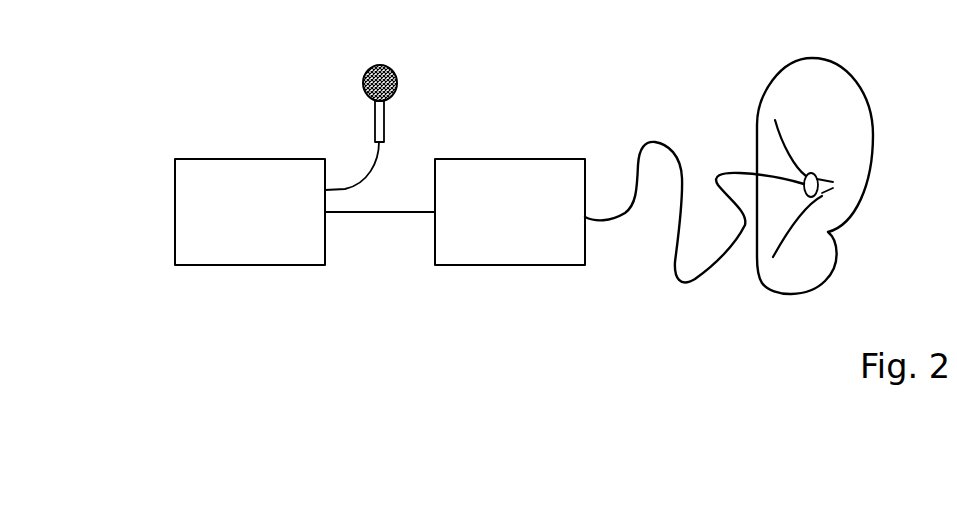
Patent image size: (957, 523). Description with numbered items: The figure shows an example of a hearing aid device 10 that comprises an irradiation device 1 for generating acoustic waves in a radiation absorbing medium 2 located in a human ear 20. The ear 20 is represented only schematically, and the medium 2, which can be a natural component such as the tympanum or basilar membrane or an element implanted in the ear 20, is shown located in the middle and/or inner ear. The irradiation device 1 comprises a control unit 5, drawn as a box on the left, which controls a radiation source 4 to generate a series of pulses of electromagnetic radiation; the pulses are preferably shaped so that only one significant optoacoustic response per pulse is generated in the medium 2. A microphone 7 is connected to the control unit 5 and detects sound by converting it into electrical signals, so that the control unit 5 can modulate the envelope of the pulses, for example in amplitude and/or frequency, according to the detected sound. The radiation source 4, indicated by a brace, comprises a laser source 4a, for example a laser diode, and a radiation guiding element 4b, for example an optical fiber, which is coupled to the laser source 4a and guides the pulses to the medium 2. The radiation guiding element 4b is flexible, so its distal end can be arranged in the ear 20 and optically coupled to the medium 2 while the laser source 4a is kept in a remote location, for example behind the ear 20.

The hearing aid device 10 is at (118, 131).
The irradiation device 1 is at (808, 366).
The control unit 5 is at (258, 230).
The microphone 7 is at (397, 90).
The radiation source 4 is at (808, 295).
The laser source 4a is at (530, 230).
The radiation guiding element 4b is at (662, 142).
The radiation absorbing medium 2 is at (816, 172).
The human ear 20 is at (876, 146).